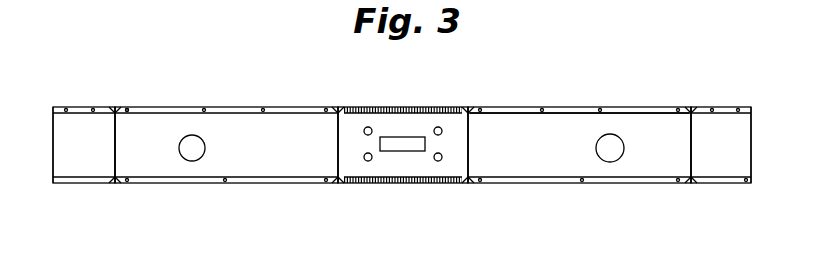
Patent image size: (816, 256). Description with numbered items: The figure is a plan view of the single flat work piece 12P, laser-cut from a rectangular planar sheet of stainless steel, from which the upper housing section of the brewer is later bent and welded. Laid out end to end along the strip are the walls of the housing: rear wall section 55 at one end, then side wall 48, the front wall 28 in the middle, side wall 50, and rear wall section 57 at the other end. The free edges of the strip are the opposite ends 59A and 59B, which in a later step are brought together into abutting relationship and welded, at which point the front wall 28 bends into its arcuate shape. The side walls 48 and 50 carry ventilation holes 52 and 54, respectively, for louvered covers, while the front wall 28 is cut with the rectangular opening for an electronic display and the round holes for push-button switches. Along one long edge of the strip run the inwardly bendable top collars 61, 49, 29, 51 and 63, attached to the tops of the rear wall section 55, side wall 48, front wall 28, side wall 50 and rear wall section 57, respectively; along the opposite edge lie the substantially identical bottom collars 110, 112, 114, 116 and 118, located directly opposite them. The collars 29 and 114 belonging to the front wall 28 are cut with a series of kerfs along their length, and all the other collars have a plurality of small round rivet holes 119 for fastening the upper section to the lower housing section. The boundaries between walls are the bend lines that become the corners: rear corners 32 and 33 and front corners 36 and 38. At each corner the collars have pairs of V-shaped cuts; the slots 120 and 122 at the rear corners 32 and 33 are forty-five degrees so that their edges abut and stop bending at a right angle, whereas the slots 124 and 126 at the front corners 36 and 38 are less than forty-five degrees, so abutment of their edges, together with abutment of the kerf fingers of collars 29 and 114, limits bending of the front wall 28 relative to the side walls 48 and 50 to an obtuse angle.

The work piece 12P is at (534, 103).
The front wall 28 is at (438, 166).
The top collar 29 is at (365, 107).
The rear corner 32 is at (115, 150).
The rear corner 33 is at (691, 150).
The front corner 36 is at (338, 150).
The front corner 38 is at (468, 150).
The side wall 48 is at (253, 162).
The top collar 49 is at (240, 107).
The side wall 50 is at (545, 165).
The top collar 51 is at (640, 107).
The ventilation hole 52 is at (192, 153).
The ventilation hole 54 is at (605, 155).
The rear wall section 55 is at (95, 162).
The rear wall section 57 is at (730, 165).
The end of work piece 59A is at (751, 148).
The end of work piece 59B is at (53, 147).
The top collar 61 is at (80, 107).
The top collar 63 is at (725, 107).
The bottom collar 110 is at (73, 183).
The bottom collar 112 is at (297, 183).
The bottom collar 114 is at (380, 183).
The bottom collar 116 is at (640, 183).
The bottom collar 118 is at (750, 183).
The rivet holes 119 is at (204, 107).
The V-shaped slots 120 is at (116, 107).
The V-shaped slots 122 is at (693, 107).
The V-shaped slots 124 is at (338, 107).
The V-shaped slots 126 is at (470, 107).